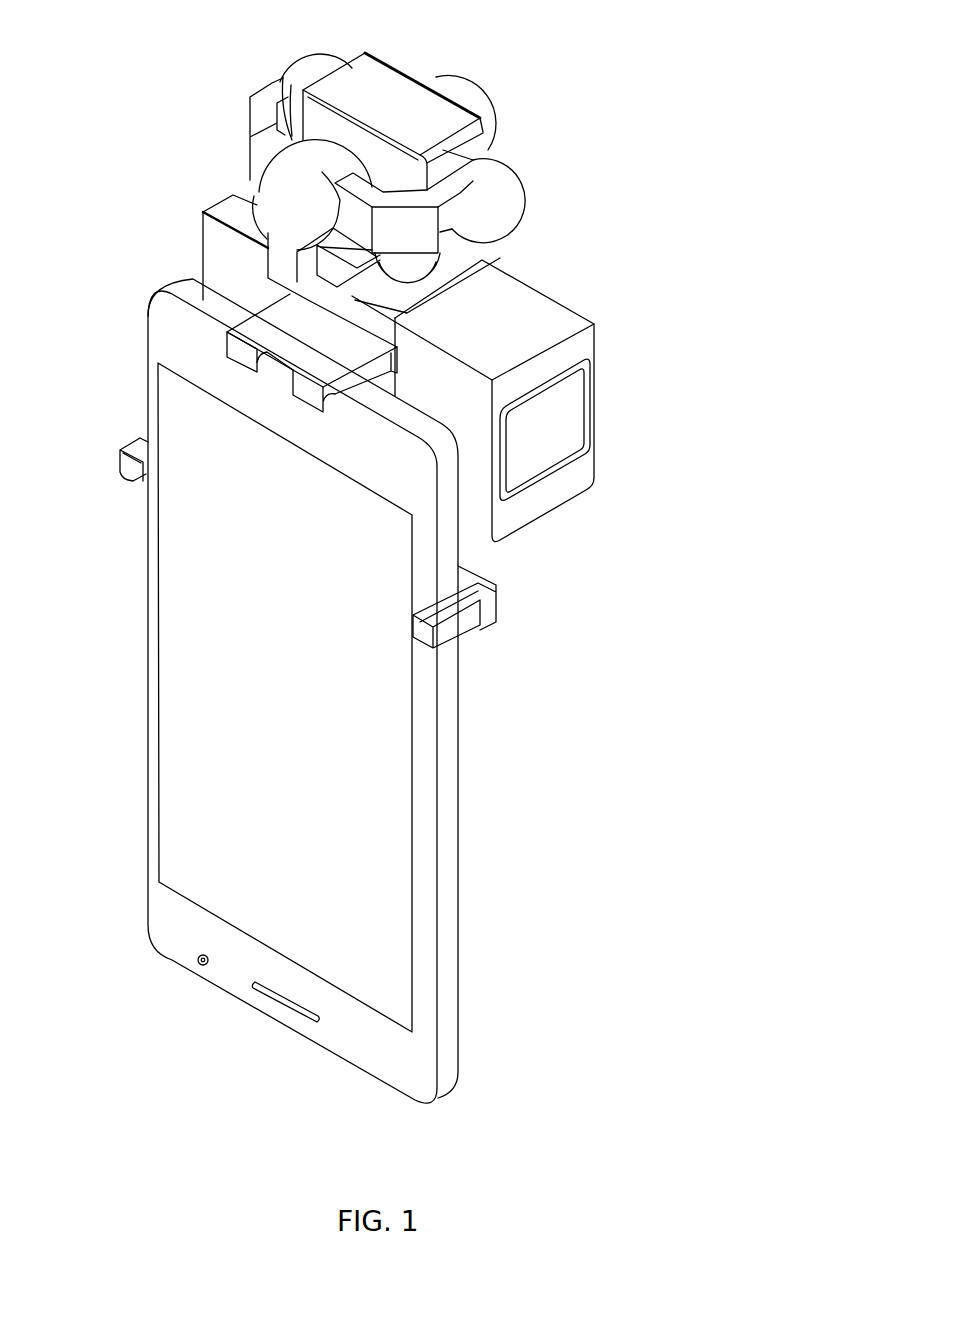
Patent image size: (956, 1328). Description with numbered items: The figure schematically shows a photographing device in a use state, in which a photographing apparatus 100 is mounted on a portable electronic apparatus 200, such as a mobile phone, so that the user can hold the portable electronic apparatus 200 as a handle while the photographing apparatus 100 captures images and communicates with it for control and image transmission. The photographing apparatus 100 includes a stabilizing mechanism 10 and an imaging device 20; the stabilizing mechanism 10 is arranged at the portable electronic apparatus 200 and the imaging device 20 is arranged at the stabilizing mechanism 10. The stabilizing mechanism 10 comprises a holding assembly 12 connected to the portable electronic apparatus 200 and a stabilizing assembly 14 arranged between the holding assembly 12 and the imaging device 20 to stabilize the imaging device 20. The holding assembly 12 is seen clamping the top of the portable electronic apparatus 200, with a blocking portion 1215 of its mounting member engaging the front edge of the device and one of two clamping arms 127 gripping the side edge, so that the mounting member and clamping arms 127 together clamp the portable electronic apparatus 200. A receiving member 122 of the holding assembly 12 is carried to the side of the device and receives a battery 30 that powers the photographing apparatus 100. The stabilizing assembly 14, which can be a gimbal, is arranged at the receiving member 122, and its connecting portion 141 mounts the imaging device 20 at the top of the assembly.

The photographing apparatus 100 is at (237, 58).
The stabilizing mechanism 10 is at (156, 157).
The holding assembly 12 is at (260, 294).
The stabilizing assembly 14 is at (266, 204).
The blocking portion 1215 is at (250, 333).
The imaging device 20 is at (396, 82).
The connecting portion 141 is at (467, 167).
The receiving member 122 is at (523, 315).
The battery 30 is at (573, 405).
The clamping arm 127 is at (458, 623).
The portable electronic apparatus 200 is at (190, 697).